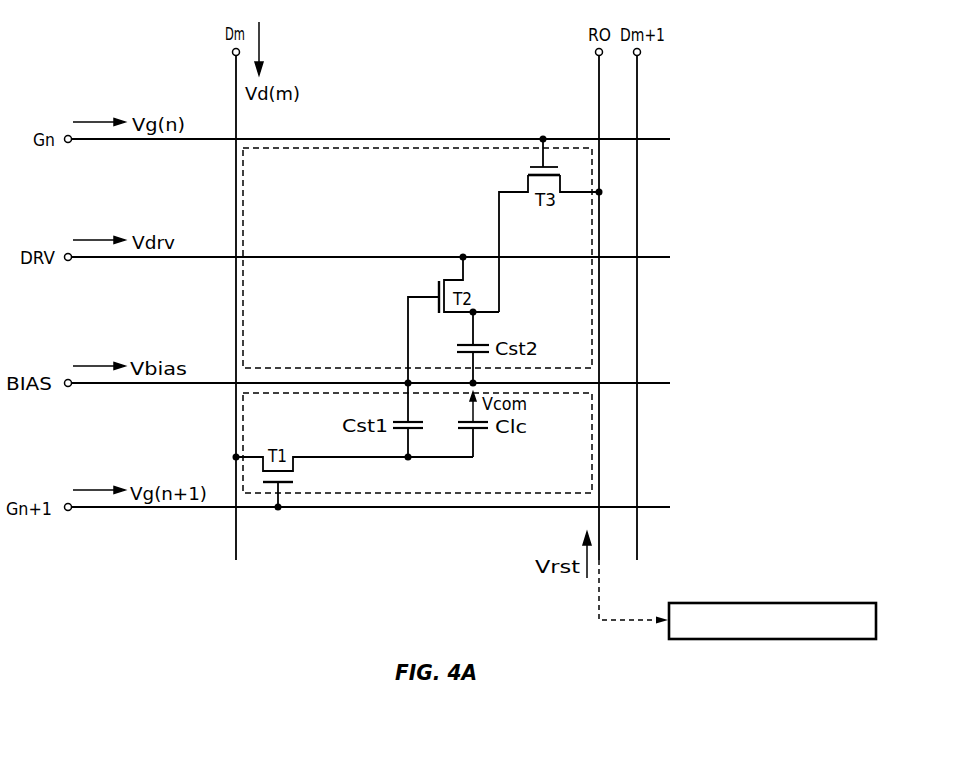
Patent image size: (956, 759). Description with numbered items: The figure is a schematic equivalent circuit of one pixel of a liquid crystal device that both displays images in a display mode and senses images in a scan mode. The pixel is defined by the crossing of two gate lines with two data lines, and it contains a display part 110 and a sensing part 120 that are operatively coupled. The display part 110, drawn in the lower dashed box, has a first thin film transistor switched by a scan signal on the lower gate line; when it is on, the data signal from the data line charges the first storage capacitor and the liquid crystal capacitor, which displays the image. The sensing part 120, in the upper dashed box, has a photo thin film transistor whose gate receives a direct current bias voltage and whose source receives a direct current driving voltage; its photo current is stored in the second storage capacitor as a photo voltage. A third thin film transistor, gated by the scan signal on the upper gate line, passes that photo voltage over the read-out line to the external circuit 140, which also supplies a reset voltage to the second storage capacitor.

The display part 110 is at (592, 428).
The sensing part 120 is at (592, 312).
The external circuit 140 is at (755, 603).